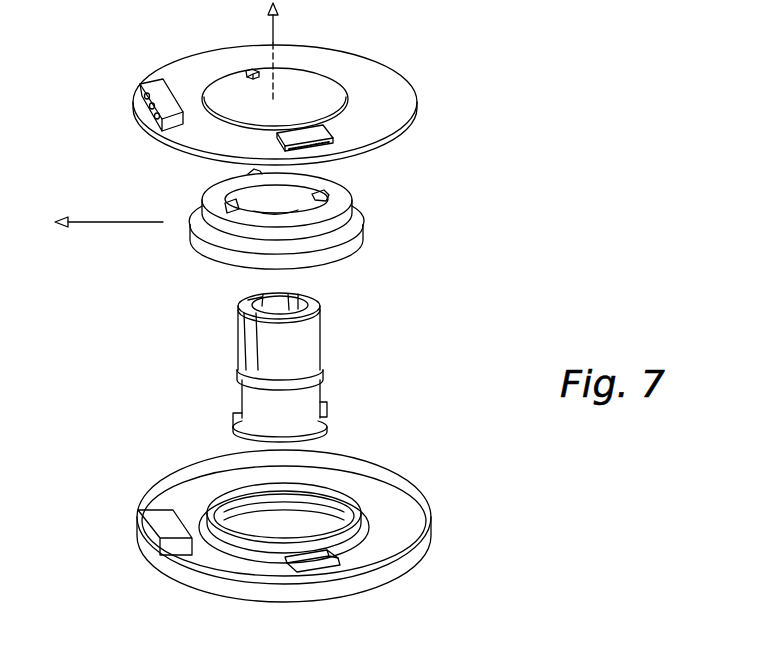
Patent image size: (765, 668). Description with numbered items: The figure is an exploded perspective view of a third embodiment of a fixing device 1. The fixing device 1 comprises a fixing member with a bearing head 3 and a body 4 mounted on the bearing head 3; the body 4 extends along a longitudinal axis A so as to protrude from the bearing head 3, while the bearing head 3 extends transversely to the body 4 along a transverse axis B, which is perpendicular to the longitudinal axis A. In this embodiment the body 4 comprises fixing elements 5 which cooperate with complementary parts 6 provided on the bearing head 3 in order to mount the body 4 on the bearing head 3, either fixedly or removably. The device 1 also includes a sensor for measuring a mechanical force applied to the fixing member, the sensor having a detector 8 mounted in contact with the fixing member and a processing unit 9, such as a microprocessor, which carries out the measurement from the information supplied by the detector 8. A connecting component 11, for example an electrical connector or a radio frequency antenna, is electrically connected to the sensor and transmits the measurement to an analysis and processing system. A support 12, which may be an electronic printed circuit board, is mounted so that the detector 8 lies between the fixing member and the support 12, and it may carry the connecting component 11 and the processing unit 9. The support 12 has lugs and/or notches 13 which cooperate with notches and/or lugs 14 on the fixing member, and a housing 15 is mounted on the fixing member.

The fixing device 1 is at (480, 172).
The bearing head 3 is at (343, 194).
The body 4 is at (293, 345).
The fixing elements 5 is at (325, 411).
The complementary parts 6 is at (228, 204).
The detector 8 is at (195, 232).
The processing unit 9 is at (333, 129).
The connecting component 11 is at (143, 90).
The support 12 is at (178, 72).
The lugs and/or notches 13 is at (252, 71).
The notches and/or lugs 14 is at (252, 173).
The housing 15 is at (398, 518).
The longitudinal axis A is at (276, 26).
The transverse axis B is at (88, 222).